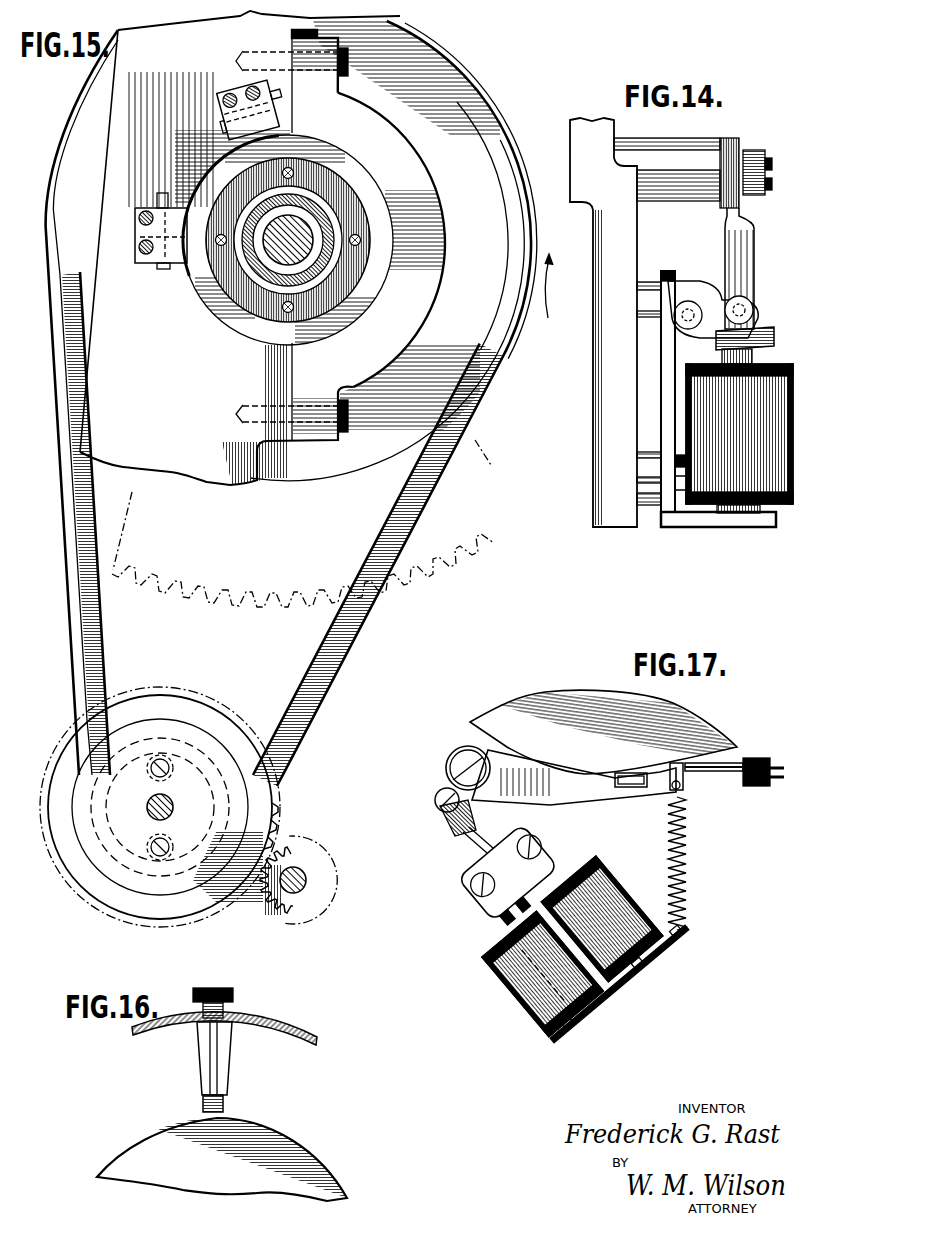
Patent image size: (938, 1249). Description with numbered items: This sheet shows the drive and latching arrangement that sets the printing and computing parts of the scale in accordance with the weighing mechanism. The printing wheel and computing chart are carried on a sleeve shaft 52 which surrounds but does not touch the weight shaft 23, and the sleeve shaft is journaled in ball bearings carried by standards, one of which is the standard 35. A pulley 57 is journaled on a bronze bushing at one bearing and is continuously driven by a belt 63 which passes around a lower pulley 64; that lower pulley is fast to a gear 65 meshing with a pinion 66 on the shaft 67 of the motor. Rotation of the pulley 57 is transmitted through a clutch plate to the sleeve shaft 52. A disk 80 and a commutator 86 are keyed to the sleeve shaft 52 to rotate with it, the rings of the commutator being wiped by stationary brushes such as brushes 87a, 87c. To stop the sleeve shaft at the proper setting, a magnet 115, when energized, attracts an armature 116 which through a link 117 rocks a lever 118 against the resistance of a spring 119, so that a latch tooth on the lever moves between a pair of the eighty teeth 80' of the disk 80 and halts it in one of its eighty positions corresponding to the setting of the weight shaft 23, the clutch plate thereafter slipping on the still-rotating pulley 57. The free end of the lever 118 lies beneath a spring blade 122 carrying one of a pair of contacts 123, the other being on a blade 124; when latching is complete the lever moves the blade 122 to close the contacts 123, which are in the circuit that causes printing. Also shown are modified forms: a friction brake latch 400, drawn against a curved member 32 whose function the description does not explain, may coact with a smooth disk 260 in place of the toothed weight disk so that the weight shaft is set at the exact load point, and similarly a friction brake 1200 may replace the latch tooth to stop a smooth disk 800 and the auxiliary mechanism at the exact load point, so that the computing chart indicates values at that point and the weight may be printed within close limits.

In FIG. 15, the weight shaft 23 is at (300, 245).
In FIG. 15, the sleeve shaft 52 is at (281, 272).
In FIG. 15, the commutator 86 is at (230, 305).
In FIG. 15, the stationary brush 87a is at (218, 160).
In FIG. 15, the stationary brush 87c is at (191, 273).
In FIG. 15, the pulley 57 is at (483, 111).
In FIG. 15, the belt 63 is at (466, 432).
In FIG. 15, the standard 35 is at (222, 486).
In FIG. 14, the standard 35 is at (608, 490).
In FIG. 15, the disk 80 is at (303, 552).
In FIG. 15, the teeth 80' is at (266, 617).
In FIG. 15, the lower pulley 64 is at (165, 740).
In FIG. 15, the gear 65 is at (265, 827).
In FIG. 15, the pinion 66 is at (265, 898).
In FIG. 15, the shaft 67 is at (293, 888).
In FIG. 14, the lever 118 is at (728, 154).
In FIG. 17, the lever 118 is at (557, 797).
In FIG. 14, the link 117 is at (748, 236).
In FIG. 17, the link 117 is at (473, 841).
In FIG. 14, the armature 116 is at (775, 337).
In FIG. 17, the armature 116 is at (487, 931).
In FIG. 14, the magnet 115 is at (781, 433).
In FIG. 17, the magnet 115 is at (521, 988).
In FIG. 17, the smooth disk 800 is at (693, 742).
In FIG. 17, the friction brake 1200 is at (630, 772).
In FIG. 17, the blade 124 is at (690, 767).
In FIG. 17, the contacts 123 is at (697, 778).
In FIG. 17, the spring blade 122 is at (730, 781).
In FIG. 17, the spring 119 is at (684, 851).
In FIG. 16, the band 32 is at (262, 1018).
In FIG. 16, the friction brake latch 400 is at (226, 1111).
In FIG. 16, the smooth disk 260 is at (285, 1138).